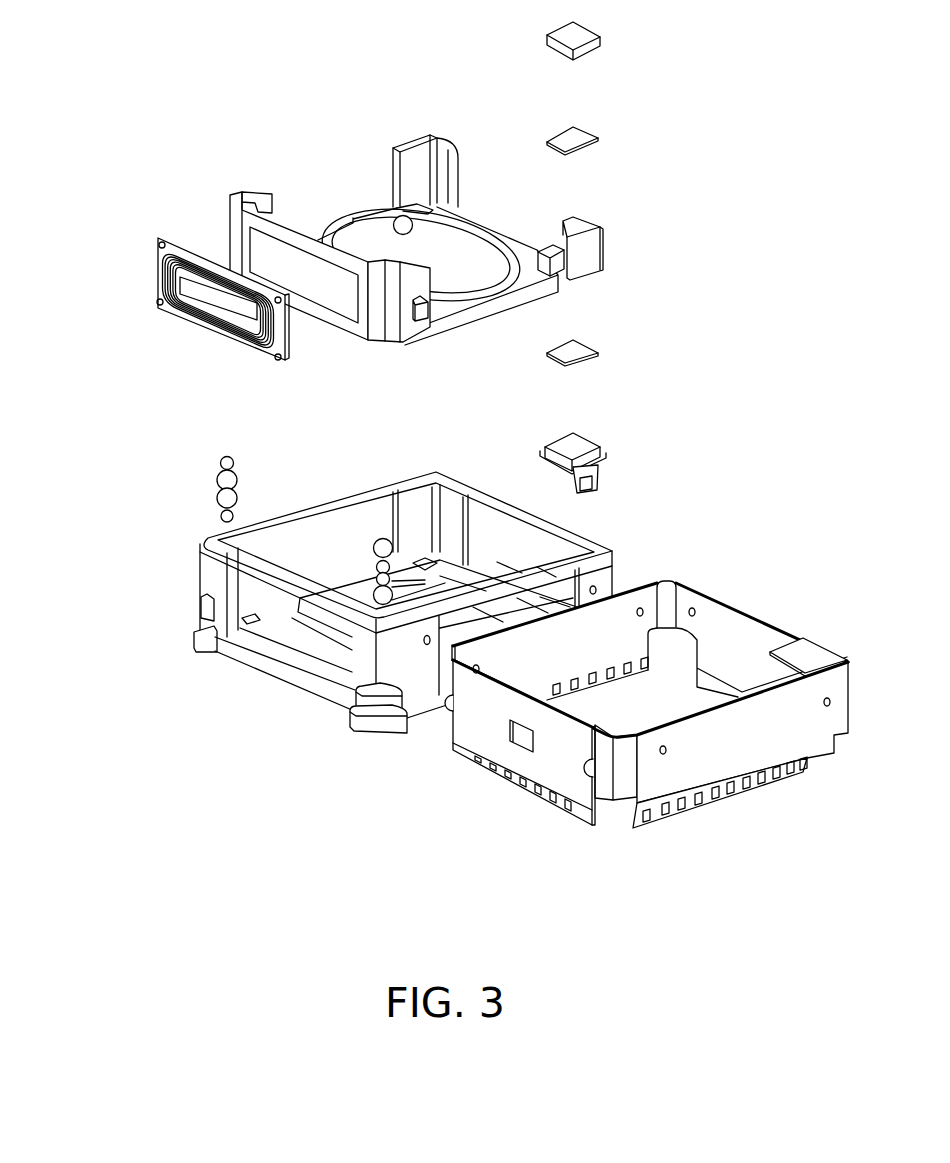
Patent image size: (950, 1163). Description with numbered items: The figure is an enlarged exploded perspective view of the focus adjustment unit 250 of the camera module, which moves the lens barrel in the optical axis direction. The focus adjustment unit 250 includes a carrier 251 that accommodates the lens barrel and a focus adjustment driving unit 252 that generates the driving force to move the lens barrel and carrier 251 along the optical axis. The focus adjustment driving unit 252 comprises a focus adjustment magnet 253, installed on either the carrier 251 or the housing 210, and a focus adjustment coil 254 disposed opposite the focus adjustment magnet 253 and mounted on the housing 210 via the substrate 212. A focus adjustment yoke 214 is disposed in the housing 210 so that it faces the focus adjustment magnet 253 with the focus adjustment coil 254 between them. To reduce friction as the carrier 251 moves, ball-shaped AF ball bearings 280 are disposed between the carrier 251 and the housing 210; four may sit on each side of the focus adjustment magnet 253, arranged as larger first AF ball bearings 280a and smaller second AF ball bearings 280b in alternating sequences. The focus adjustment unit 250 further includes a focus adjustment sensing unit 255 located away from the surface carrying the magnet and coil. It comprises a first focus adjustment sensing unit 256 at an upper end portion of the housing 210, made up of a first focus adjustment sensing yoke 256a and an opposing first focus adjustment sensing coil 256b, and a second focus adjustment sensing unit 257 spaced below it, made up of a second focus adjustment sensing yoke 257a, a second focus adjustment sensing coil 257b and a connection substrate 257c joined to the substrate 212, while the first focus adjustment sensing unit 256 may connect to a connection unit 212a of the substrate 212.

The housing 210 is at (418, 682).
The substrate 212 is at (677, 711).
The connection unit 212a is at (818, 632).
The focus adjustment yoke 214 is at (555, 767).
The focus adjustment unit 250 is at (308, 276).
The carrier 251 is at (248, 202).
The focus adjustment driving unit 252 is at (215, 322).
The focus adjustment magnet 253 is at (323, 285).
The focus adjustment coil 254 is at (232, 314).
The focus adjustment sensing unit 255 is at (702, 262).
The first focus adjustment sensing unit 256 is at (675, 88).
The first focus adjustment sensing yoke 256a is at (583, 137).
The first focus adjustment sensing coil 256b is at (583, 35).
The second focus adjustment sensing unit 257 is at (672, 418).
The second focus adjustment sensing yoke 257a is at (577, 350).
The second focus adjustment sensing coil 257b is at (577, 442).
The connection substrate 257c is at (593, 475).
The AF ball bearing 280 is at (236, 589).
The first AF ball bearing 280a is at (217, 498).
The second AF ball bearing 280b is at (220, 463).